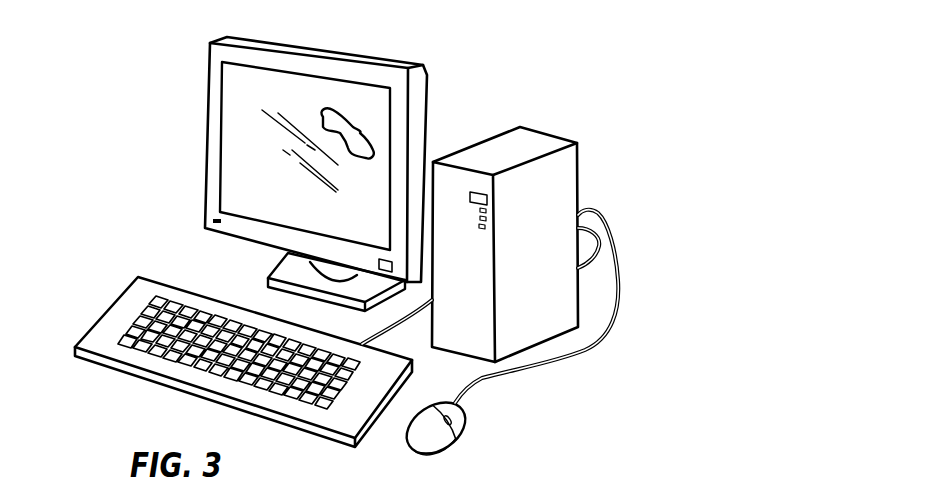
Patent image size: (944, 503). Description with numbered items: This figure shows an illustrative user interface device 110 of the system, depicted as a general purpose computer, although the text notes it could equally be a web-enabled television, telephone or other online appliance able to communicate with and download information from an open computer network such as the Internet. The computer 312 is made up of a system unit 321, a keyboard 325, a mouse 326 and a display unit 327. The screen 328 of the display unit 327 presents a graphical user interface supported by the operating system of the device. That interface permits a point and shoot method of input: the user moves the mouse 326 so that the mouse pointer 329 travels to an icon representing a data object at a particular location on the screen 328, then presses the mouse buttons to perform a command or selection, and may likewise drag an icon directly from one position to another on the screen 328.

The user interface device 110 is at (532, 40).
The display device 312 is at (172, 116).
The system unit 321 is at (547, 130).
The keyboard 325 is at (107, 308).
The mouse 326 is at (452, 432).
The display unit 327 is at (268, 42).
The screen 328 is at (283, 202).
The mouse pointer 329 is at (348, 116).